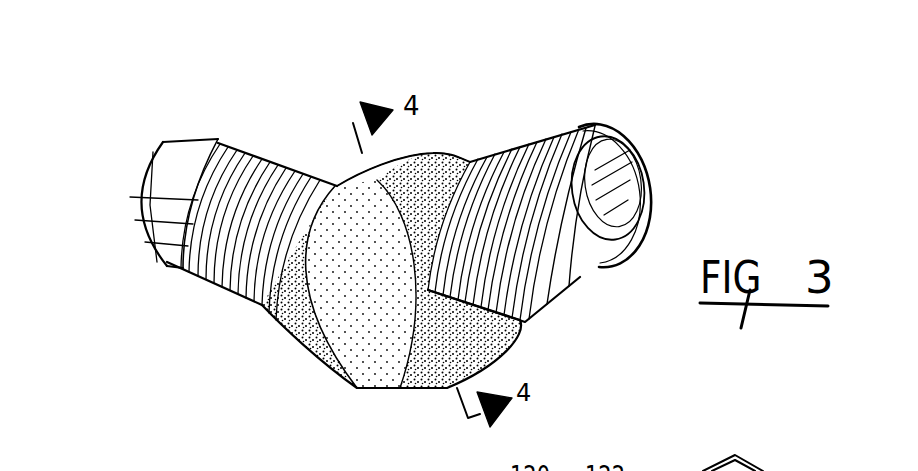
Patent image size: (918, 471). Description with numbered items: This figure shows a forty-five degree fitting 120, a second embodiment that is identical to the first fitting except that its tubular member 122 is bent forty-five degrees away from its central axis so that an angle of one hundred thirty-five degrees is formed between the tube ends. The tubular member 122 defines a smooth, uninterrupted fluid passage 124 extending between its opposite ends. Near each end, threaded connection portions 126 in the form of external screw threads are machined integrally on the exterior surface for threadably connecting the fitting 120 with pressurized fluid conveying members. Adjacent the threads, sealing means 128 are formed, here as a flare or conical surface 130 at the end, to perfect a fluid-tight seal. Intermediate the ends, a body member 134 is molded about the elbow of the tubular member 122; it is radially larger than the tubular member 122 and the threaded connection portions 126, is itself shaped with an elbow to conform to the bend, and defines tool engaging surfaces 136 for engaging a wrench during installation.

The fitting 120 is at (452, 80).
The tubular member 122 is at (632, 150).
The fluid passage 124 is at (640, 180).
The threaded connection portion 126 is at (214, 300).
The sealing means 128 is at (130, 233).
The flare or conical surface 130 is at (130, 184).
The body member 134 is at (300, 350).
The tool engaging surfaces 136 is at (468, 163).